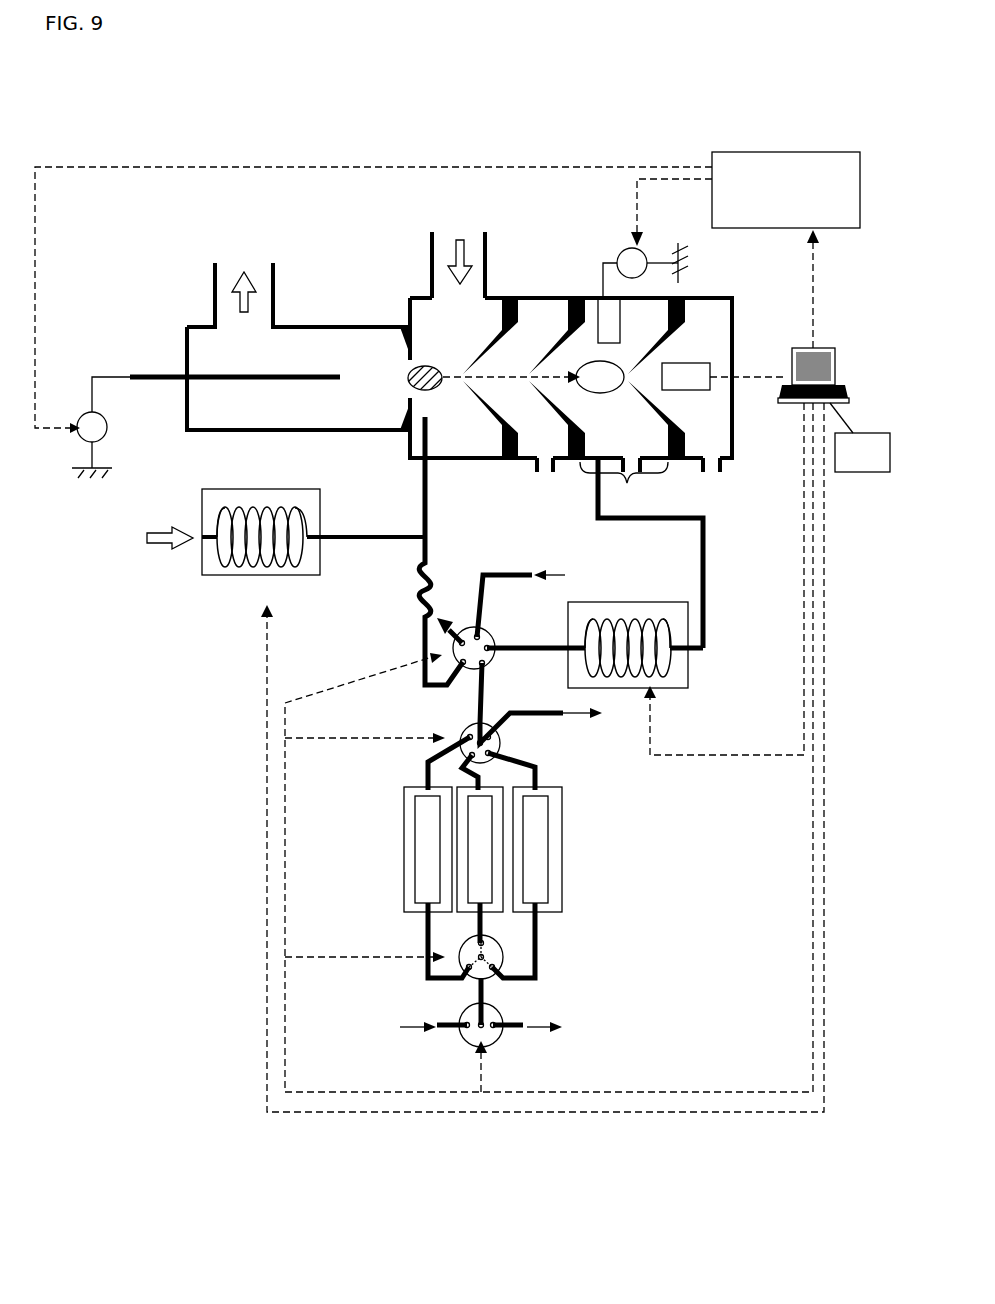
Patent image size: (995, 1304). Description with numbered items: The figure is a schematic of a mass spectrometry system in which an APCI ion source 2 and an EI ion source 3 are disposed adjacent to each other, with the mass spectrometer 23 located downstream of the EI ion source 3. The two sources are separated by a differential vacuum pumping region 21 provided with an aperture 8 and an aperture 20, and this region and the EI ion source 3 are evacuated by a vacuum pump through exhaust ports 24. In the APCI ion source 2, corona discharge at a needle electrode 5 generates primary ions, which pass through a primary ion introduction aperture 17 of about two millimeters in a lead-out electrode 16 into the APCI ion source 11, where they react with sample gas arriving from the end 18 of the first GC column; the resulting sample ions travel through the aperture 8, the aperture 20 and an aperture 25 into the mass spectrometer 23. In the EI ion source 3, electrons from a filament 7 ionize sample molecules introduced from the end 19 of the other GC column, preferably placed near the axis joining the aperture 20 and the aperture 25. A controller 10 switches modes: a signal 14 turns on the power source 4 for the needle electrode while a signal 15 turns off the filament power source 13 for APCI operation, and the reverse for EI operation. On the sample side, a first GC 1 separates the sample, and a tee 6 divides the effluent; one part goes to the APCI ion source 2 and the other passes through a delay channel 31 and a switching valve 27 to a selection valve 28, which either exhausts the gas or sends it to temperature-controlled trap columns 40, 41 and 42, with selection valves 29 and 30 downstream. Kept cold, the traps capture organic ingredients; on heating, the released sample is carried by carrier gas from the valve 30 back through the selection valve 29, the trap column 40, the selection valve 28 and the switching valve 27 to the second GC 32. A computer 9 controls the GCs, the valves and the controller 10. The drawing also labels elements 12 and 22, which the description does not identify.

The first GC 1 is at (235, 575).
The APCI ion source 2 is at (490, 232).
The EI ion source 3 is at (624, 486).
The power source for the needle electrode 4 is at (112, 436).
The needle electrode 5 is at (220, 372).
The tee 6 is at (410, 540).
The filament 7 is at (618, 328).
The aperture 8 is at (410, 332).
The computer 9 is at (845, 360).
The controller 10 is at (750, 152).
The APCI ion source 11 is at (410, 360).
The vacuum port 12 is at (645, 466).
The filament power source 13 is at (648, 252).
The signal 14 is at (123, 165).
The signal 15 is at (636, 196).
The lead-out electrode 16 is at (405, 435).
The primary ion introduction aperture 17 is at (400, 418).
The end at the exit of the GC column 18 is at (427, 400).
The end at the exit of the other GC column 19 is at (620, 398).
The aperture 20 is at (523, 372).
The differential vacuum pumping region 21 is at (525, 437).
The gas inlet 22 is at (452, 232).
The mass spectrometer 23 is at (702, 360).
The exhaust ports 24 is at (710, 477).
The aperture 25 is at (628, 376).
The switching valve 27 is at (455, 660).
The selection valve 28 is at (500, 743).
The selection valve 29 is at (503, 957).
The selection valve 30 is at (497, 1036).
The delay channel 31 is at (415, 590).
The second GC 32 is at (670, 670).
The trap column 40 is at (423, 882).
The trap column 41 is at (475, 812).
The trap column 42 is at (535, 872).